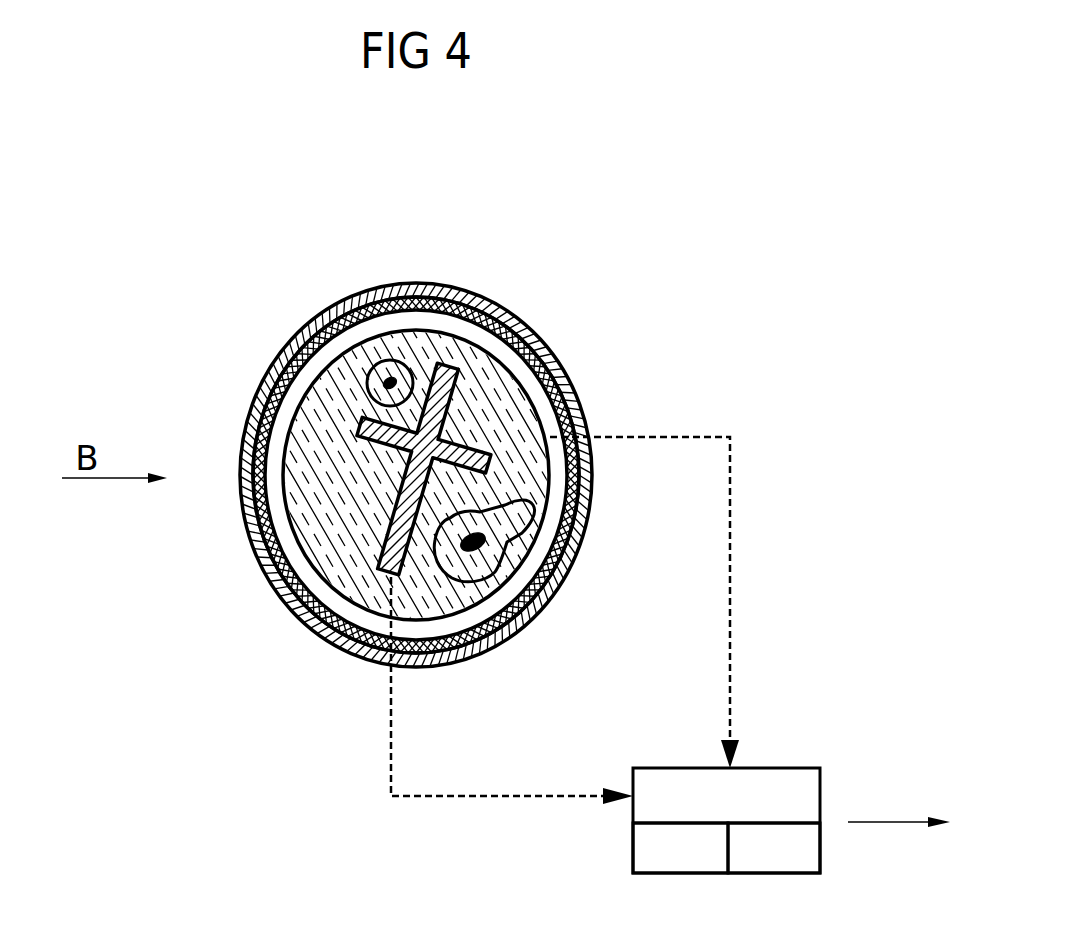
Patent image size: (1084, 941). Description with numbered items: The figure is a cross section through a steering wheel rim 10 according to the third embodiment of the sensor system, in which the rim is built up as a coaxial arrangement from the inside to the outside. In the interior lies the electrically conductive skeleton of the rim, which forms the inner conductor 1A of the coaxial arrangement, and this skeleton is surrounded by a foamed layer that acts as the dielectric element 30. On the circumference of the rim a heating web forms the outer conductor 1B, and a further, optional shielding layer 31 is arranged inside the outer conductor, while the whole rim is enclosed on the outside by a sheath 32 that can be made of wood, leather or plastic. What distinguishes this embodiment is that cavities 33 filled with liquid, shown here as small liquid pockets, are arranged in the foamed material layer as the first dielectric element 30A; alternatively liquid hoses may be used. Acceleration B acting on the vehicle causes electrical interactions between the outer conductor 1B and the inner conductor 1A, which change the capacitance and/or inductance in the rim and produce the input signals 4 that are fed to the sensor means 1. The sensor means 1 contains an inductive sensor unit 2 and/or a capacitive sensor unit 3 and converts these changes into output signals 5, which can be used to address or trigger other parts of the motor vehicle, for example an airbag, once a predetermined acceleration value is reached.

The sensor means 1 is at (726, 820).
The inductive sensor unit 2 is at (680, 848).
The capacitive sensor unit 3 is at (774, 848).
The input signals 4 is at (730, 617).
The output signals 5 is at (899, 803).
The steering wheel rim 10 is at (245, 623).
The inner conductor 1A is at (587, 517).
The outer conductor 1B is at (380, 572).
The dielectric element 30 is at (318, 517).
The first dielectric element 30A is at (542, 333).
The shielding layer 31 is at (570, 378).
The sheath 32 is at (416, 406).
The cavities 33 is at (460, 577).